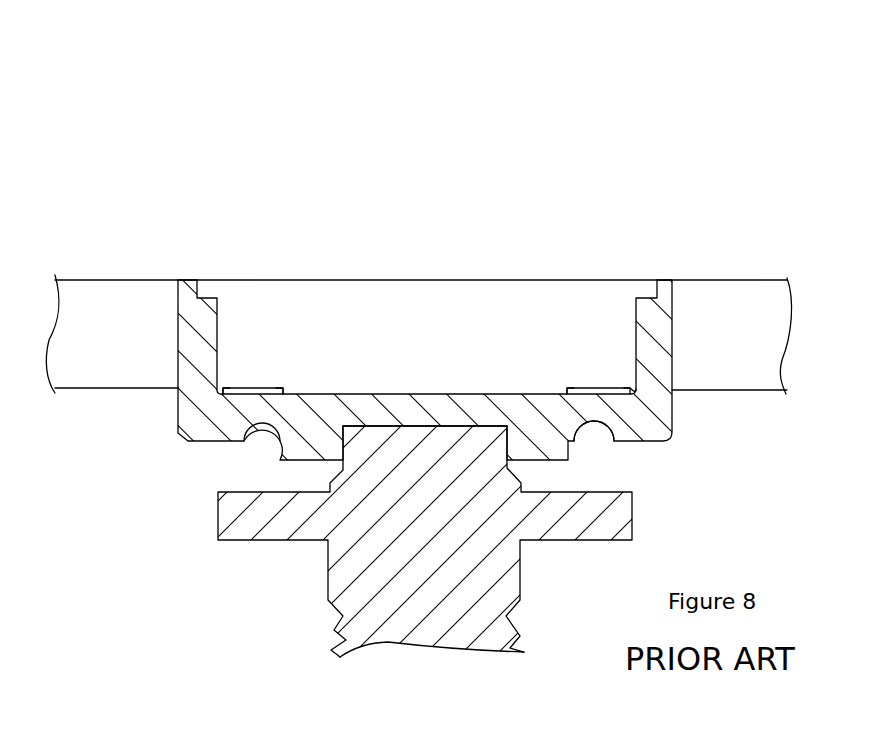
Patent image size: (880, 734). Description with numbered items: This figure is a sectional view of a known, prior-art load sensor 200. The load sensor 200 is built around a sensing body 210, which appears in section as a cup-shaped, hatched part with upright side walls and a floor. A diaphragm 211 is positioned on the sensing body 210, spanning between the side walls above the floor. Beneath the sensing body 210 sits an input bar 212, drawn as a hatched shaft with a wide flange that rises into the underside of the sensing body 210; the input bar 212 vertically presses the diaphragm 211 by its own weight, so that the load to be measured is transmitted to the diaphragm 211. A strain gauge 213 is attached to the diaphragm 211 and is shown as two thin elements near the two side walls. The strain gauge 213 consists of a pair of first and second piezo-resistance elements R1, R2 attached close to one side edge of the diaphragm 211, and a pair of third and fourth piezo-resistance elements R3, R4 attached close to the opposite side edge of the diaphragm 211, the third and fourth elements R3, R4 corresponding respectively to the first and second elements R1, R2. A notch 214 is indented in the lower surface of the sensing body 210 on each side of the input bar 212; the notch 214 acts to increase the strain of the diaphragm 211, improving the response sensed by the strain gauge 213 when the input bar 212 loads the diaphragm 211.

The load sensor 200 is at (162, 155).
The sensing body 210 is at (376, 277).
The diaphragm 211 is at (462, 392).
The input bar 212 is at (356, 584).
The strain gauge 213 is at (261, 350).
The notch 214 is at (248, 441).
The first piezo-resistance element R1 is at (232, 387).
The second piezo-resistance element R2 is at (281, 389).
The third piezo-resistance element R3 is at (579, 388).
The fourth piezo-resistance element R4 is at (621, 389).